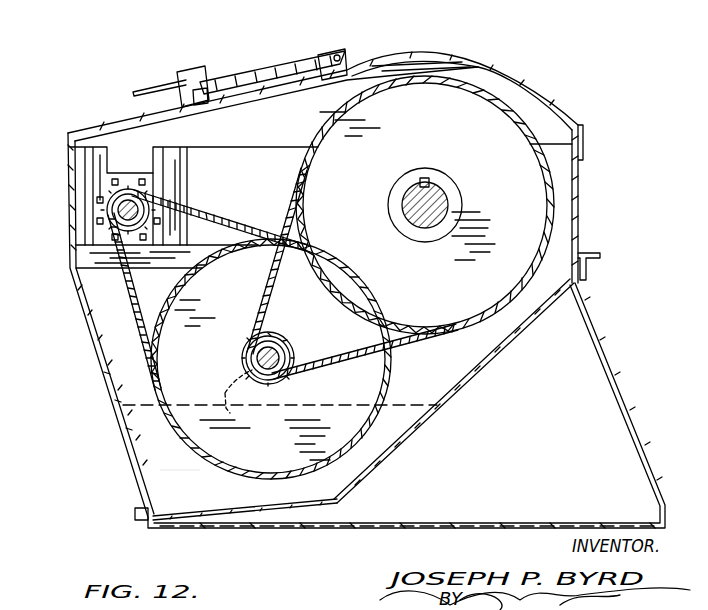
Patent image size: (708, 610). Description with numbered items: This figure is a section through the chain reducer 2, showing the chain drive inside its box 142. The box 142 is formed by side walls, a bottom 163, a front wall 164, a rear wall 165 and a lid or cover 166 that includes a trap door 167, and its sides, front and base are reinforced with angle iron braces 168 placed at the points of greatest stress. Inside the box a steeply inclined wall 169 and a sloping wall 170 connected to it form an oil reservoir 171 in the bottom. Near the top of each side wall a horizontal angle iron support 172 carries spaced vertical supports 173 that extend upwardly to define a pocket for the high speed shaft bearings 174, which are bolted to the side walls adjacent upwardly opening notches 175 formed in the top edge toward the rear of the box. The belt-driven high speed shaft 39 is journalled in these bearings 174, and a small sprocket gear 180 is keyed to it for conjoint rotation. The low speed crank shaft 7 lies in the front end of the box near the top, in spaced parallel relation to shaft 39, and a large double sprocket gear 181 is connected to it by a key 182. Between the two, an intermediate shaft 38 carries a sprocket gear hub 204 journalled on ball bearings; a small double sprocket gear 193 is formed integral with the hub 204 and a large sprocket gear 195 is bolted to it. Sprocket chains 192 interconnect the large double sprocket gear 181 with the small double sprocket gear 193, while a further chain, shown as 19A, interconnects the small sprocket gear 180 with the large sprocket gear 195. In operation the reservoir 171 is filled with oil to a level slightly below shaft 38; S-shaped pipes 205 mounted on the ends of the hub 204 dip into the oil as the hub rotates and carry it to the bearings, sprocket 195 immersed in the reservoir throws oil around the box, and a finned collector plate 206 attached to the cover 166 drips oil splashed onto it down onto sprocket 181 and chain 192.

The chain reducer 2 is at (590, 214).
The low speed crank shaft 7 is at (443, 197).
The shaft 38 is at (283, 353).
The belt-driven high speed shaft 39 is at (117, 208).
The box 142 is at (92, 337).
The bottom 163 is at (322, 528).
The front wall 164 is at (581, 243).
The rear wall 165 is at (106, 375).
The lid or cover 166 is at (531, 95).
The trap door 167 is at (272, 68).
The angle iron braces 168 is at (594, 258).
The steeply inclined wall 169 is at (489, 378).
The sloping wall 170 is at (287, 507).
The oil reservoir 171 is at (160, 468).
The horizontal angle iron support 172 is at (97, 267).
The vertical supports 173 is at (88, 168).
The high speed shaft bearings 174 is at (100, 187).
The upwardly opening notches 175 is at (115, 163).
The small sprocket gear 180 is at (152, 212).
The large double sprocket gear 181 is at (479, 113).
The key 182 is at (427, 177).
The sprocket chains 192 is at (401, 344).
The small double sprocket gear 193 is at (292, 322).
The chain 19A is at (230, 220).
The large sprocket gear 195 is at (170, 335).
The sprocket gear hub 204 is at (247, 353).
The S-shaped pipes 205 is at (223, 393).
The finned collector plate 206 is at (441, 70).